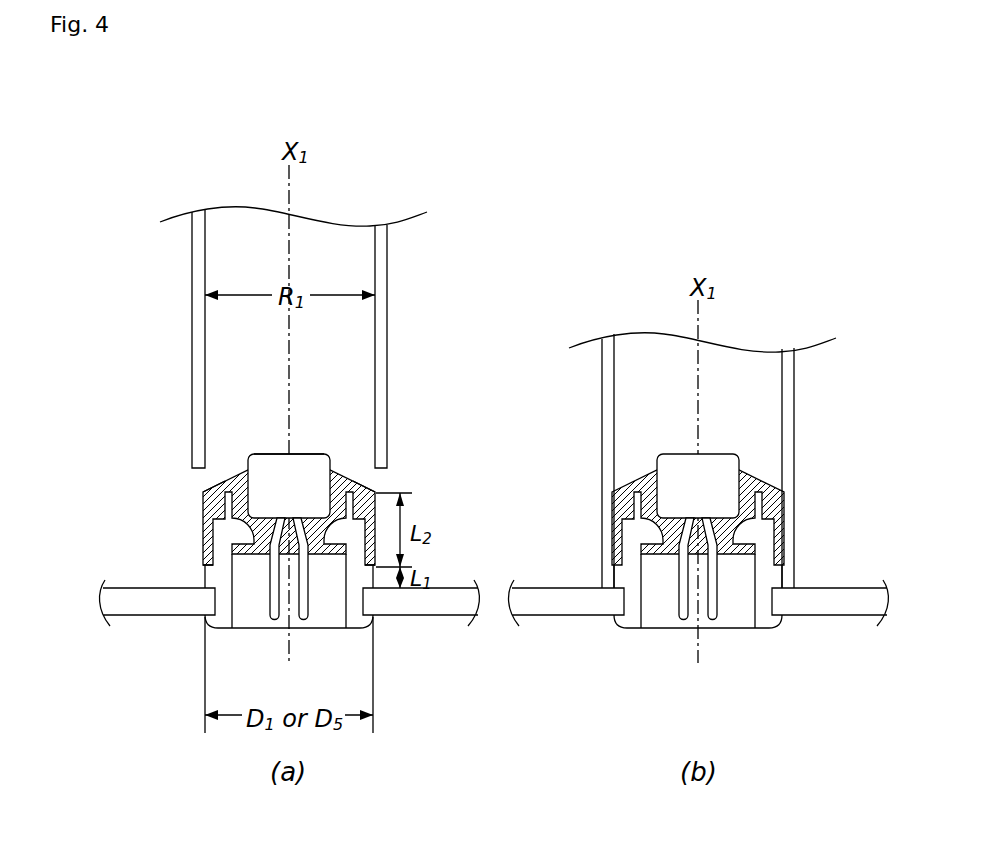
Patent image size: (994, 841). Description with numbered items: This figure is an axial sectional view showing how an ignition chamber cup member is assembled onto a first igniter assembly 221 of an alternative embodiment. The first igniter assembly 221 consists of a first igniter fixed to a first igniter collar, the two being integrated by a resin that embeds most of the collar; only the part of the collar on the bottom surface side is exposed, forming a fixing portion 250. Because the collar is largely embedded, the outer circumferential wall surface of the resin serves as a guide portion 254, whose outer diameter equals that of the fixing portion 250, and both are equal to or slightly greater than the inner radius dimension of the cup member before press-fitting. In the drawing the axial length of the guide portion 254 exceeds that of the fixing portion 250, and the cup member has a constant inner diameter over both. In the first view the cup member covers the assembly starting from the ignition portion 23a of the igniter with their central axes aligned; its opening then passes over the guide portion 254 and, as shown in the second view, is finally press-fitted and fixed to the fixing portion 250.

The ignition portion 23a is at (298, 456).
The guide portion 254 is at (203, 515).
The fixing portion 250 is at (203, 573).
The first igniter assembly 221 is at (306, 637).